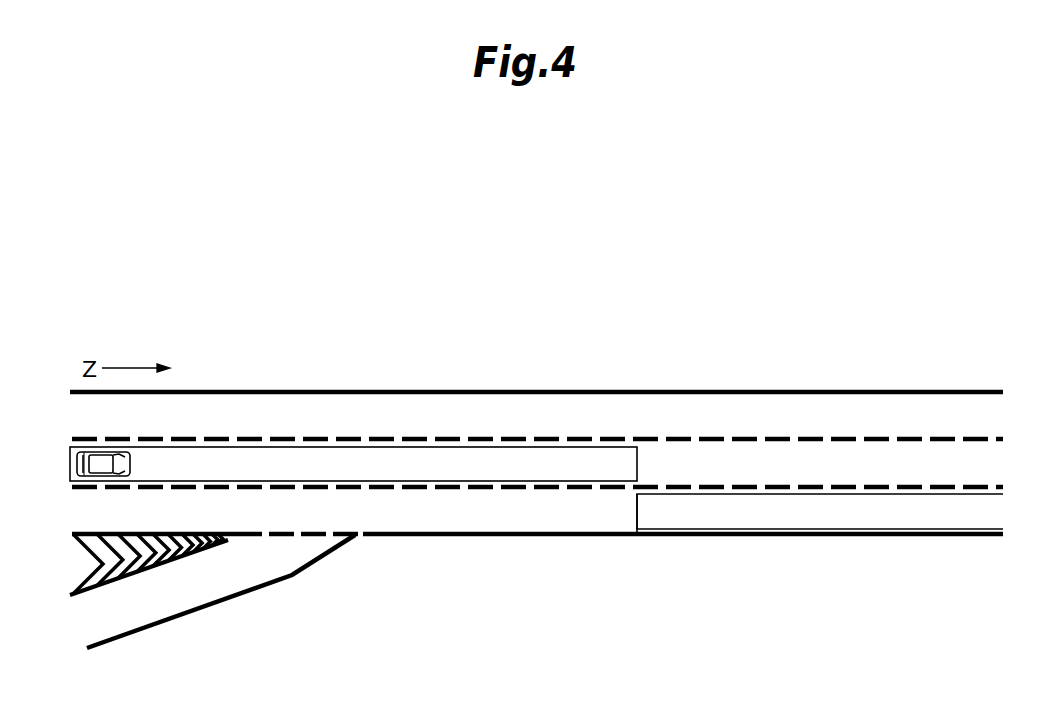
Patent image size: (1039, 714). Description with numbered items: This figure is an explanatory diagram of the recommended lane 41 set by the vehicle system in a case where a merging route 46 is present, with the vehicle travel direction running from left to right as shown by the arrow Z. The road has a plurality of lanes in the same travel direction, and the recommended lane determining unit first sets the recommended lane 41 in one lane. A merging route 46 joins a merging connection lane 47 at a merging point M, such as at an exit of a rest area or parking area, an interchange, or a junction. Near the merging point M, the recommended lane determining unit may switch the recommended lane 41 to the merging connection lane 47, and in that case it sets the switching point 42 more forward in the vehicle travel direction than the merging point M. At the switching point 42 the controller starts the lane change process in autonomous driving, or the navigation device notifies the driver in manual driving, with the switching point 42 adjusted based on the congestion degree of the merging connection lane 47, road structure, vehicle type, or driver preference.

The recommended lane 41 is at (476, 446).
The switching point 42 is at (636, 543).
The merging route 46 is at (197, 603).
The merging connection lane 47 is at (508, 533).
The merging point M is at (282, 538).